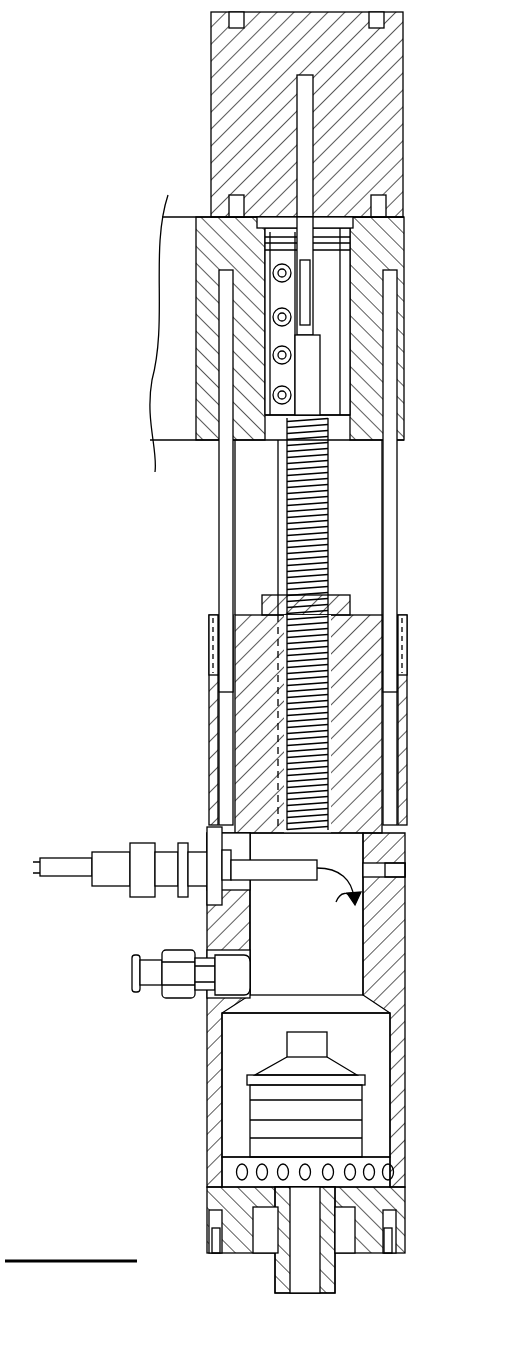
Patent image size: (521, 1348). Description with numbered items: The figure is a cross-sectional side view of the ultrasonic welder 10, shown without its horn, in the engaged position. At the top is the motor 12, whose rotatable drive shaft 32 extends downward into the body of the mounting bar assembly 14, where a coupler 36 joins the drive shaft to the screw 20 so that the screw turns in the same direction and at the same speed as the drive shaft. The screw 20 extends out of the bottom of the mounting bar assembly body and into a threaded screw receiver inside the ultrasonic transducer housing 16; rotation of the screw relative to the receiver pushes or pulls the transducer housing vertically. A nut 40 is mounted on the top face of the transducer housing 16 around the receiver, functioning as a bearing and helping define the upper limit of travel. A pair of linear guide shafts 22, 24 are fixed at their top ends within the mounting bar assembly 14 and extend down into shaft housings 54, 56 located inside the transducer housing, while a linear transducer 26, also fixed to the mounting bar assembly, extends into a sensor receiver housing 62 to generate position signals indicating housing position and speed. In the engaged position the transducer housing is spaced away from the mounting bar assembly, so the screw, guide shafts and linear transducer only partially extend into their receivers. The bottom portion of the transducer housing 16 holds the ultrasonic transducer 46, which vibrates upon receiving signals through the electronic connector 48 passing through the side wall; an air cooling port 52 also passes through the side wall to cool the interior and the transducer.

The welder 10 is at (169, 45).
The motor 12 is at (408, 120).
The mounting bar assembly 14 is at (410, 242).
The ultrasonic transducer housing 16 is at (412, 820).
The screw 20 is at (325, 502).
The linear guide shaft 22 is at (397, 525).
The linear guide shaft 24 is at (225, 545).
The linear transducer 26 is at (282, 526).
The drive shaft 32 is at (300, 122).
The coupler 36 is at (330, 316).
The nut 40 is at (342, 595).
The ultrasonic transducer 46 is at (263, 1112).
The electronic connector 48 is at (140, 845).
The air cooling port 52 is at (168, 990).
The shaft housing 54 is at (393, 738).
The shaft housing 56 is at (225, 722).
The sensor receiver housing 62 is at (278, 781).